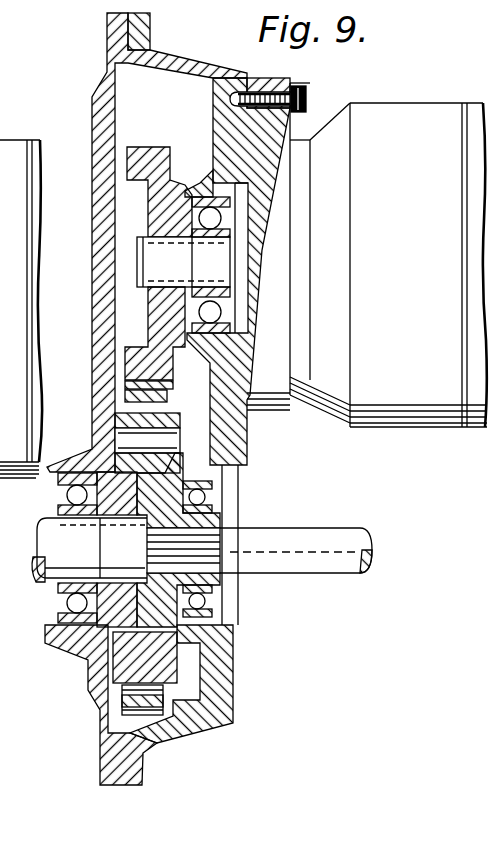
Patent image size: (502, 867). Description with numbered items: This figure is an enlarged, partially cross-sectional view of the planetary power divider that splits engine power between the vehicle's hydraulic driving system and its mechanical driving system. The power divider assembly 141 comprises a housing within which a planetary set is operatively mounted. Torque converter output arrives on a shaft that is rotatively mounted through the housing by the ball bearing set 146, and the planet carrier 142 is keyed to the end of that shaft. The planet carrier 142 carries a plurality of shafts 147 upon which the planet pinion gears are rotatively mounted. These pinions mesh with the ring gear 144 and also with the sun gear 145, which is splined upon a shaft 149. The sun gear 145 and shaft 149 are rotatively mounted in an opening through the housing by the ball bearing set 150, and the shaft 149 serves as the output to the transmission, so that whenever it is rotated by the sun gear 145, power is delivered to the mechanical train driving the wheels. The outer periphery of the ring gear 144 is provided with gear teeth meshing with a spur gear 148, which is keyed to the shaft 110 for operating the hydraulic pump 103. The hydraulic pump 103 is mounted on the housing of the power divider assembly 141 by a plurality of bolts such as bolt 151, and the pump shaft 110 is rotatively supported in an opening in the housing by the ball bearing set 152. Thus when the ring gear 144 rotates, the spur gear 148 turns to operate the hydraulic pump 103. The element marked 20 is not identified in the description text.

The power divider assembly 141 is at (92, 73).
The planet carrier 142 is at (172, 661).
The ring gear 144 is at (160, 397).
The sun gear 145 is at (162, 416).
The ball bearing set 146 is at (56, 507).
The shafts 147 is at (166, 445).
The spur gear 148 is at (203, 127).
The shaft 149 is at (305, 559).
The ball bearing set 150 is at (215, 501).
The bolt 151 is at (352, 94).
The ball bearing set 152 is at (201, 196).
The hydraulic pump 103 is at (432, 186).
The shaft 110 is at (182, 272).
The seal 20 is at (33, 583).